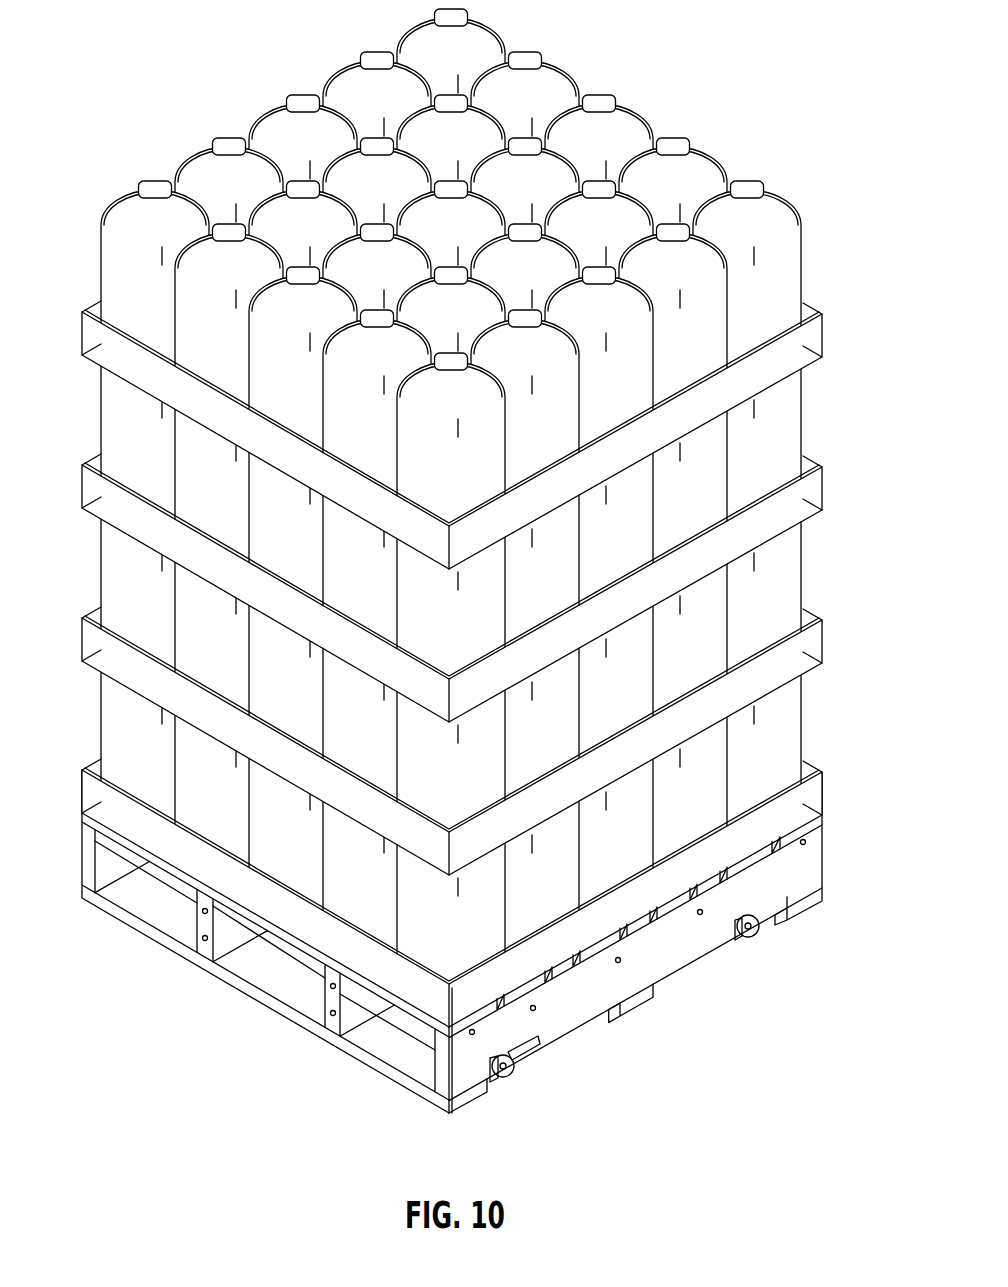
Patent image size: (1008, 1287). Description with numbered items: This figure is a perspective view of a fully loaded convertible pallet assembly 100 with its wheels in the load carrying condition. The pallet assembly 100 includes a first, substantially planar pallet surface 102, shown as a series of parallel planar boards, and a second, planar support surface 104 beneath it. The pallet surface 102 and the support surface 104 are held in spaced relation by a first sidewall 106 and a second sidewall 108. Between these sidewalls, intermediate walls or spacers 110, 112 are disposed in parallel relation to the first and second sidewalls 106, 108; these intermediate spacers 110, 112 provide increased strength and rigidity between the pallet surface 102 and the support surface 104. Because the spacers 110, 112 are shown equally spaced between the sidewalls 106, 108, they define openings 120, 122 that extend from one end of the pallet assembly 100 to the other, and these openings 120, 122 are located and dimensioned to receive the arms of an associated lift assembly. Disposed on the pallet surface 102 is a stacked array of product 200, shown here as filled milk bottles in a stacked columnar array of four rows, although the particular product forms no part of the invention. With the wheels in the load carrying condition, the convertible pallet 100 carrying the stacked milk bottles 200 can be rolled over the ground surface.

The convertible pallet assembly 100 is at (156, 1085).
The pallet surface 102 is at (812, 816).
The support surface 104 is at (802, 918).
The first sidewall 106 is at (688, 942).
The second sidewall 108 is at (80, 838).
The intermediate wall or spacer 110 is at (332, 1018).
The intermediate wall or spacer 112 is at (200, 950).
The opening 120 is at (412, 1060).
The opening 122 is at (166, 914).
The stacked array of product 200 is at (792, 273).